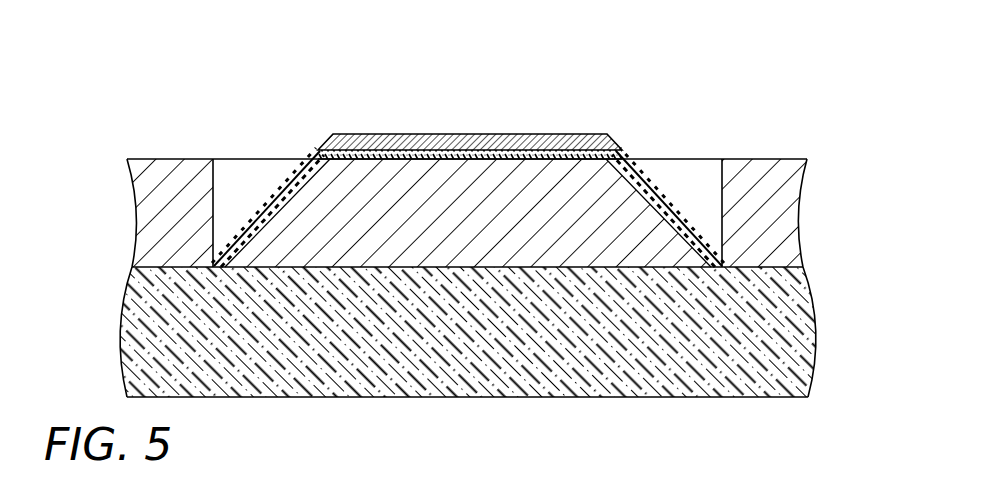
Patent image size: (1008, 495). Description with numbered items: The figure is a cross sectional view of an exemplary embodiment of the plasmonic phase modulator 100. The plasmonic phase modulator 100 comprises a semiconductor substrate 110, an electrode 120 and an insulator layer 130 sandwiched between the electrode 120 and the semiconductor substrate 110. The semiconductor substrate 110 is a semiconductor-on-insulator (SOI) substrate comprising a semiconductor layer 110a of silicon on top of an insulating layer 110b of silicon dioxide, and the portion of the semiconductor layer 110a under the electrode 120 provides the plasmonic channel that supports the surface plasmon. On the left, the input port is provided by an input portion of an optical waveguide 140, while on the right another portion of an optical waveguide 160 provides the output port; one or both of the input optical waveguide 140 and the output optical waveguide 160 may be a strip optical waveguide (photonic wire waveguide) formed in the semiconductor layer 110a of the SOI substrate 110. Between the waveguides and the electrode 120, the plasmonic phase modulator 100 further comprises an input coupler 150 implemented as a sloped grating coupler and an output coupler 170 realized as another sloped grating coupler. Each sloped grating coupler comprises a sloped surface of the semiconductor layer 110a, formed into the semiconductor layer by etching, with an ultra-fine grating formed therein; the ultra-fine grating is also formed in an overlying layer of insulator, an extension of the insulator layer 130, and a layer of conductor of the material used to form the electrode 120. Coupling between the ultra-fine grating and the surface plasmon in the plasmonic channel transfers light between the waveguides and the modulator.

The plasmonic phase modulator 100 is at (477, 207).
The semiconductor substrate 110 is at (477, 233).
The semiconductor layer 110a is at (430, 180).
The insulating layer 110b is at (125, 302).
The electrode 120 is at (472, 134).
The insulator layer 130 is at (548, 152).
The input optical waveguide 140 is at (175, 159).
The input coupler 150 is at (262, 185).
The output optical waveguide 160 is at (765, 159).
The output coupler 170 is at (675, 185).